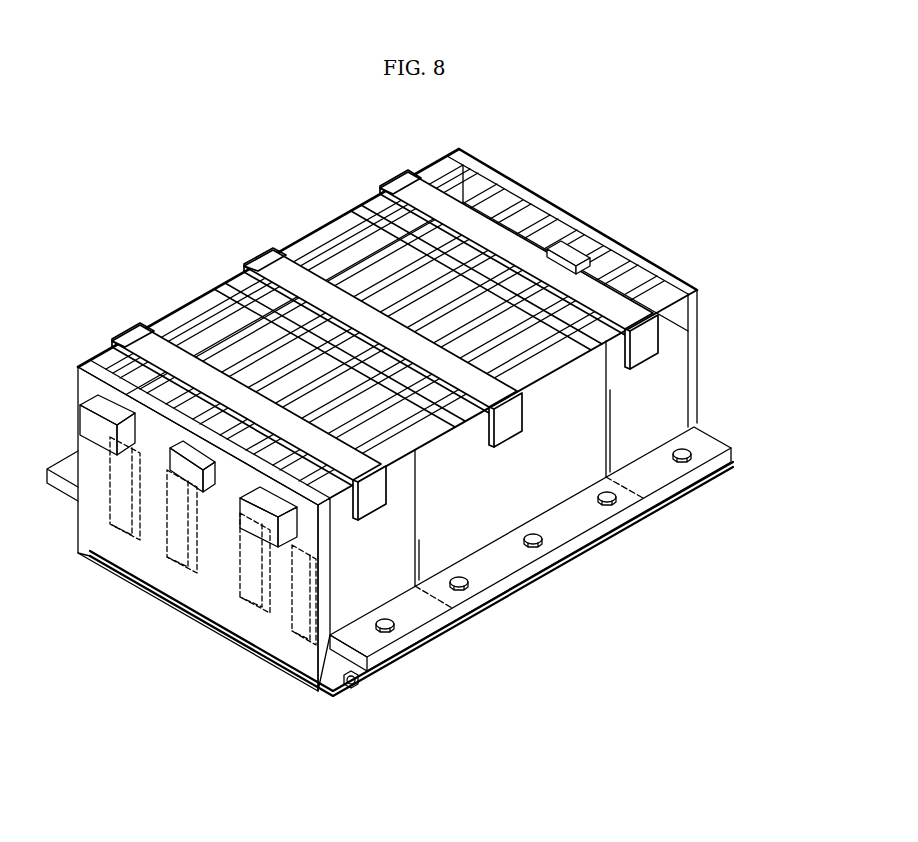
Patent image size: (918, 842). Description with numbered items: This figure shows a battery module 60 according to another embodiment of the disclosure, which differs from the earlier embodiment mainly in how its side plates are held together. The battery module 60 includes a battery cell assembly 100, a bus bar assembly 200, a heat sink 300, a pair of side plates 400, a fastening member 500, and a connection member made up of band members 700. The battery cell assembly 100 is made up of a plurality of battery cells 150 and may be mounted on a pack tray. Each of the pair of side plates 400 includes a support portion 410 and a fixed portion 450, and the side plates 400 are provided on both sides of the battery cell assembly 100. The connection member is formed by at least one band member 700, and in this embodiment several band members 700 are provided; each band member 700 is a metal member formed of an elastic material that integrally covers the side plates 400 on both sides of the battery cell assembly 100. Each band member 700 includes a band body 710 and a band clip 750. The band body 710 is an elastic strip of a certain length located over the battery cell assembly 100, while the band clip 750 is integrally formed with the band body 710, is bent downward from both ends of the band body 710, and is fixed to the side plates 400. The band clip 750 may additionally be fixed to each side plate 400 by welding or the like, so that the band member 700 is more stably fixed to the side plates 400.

The battery module 60 is at (212, 172).
The battery cell assembly 100 is at (370, 241).
The battery cell 150 is at (568, 320).
The bus bar assembly 200 is at (157, 610).
The heat sink 300 is at (250, 657).
The side plate 400 is at (712, 490).
The support portion 410 is at (663, 382).
The fixed portion 450 is at (574, 520).
The fastening member 500 is at (470, 583).
The band member 700 is at (262, 246).
The band body 710 is at (493, 236).
The band clip 750 is at (650, 335).